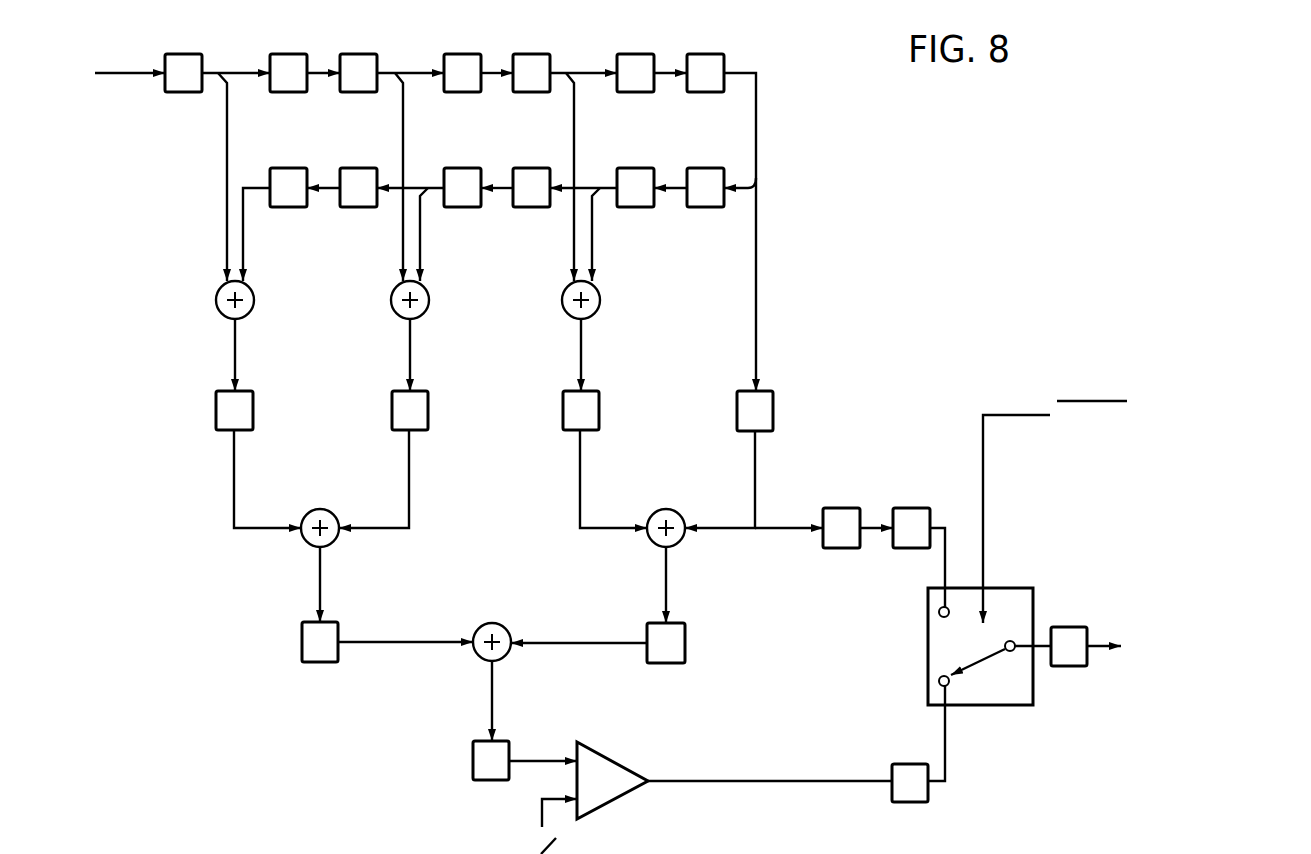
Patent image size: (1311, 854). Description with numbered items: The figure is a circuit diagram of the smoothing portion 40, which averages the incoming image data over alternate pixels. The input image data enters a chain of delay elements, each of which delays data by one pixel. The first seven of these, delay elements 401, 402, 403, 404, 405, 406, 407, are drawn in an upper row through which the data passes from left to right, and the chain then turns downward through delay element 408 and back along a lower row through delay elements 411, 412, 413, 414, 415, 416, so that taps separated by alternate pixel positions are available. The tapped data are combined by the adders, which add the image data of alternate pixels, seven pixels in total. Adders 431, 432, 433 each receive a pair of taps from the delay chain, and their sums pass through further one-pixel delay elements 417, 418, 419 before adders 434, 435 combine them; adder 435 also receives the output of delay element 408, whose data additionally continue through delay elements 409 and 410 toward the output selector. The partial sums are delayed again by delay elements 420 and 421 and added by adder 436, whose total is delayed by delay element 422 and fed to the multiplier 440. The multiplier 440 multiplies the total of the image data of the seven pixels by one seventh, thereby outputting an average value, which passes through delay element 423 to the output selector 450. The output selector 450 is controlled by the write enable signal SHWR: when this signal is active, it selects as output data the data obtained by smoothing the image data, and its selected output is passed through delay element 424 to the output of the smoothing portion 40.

The smoothing portion 40 is at (1020, 200).
The delay element 401 is at (178, 54).
The delay element 402 is at (282, 54).
The delay element 403 is at (352, 54).
The delay element 404 is at (455, 54).
The delay element 405 is at (527, 54).
The delay element 406 is at (627, 54).
The delay element 407 is at (700, 54).
The delay element 408 is at (765, 391).
The delay element 409 is at (831, 508).
The delay element 410 is at (906, 508).
The delay element 411 is at (700, 168).
The delay element 412 is at (627, 168).
The delay element 413 is at (525, 168).
The delay element 414 is at (455, 168).
The delay element 415 is at (352, 168).
The delay element 416 is at (280, 168).
The delay element 417 is at (251, 391).
The delay element 418 is at (423, 391).
The delay element 419 is at (592, 391).
The delay element 420 is at (328, 622).
The delay element 421 is at (672, 623).
The delay element 422 is at (500, 741).
The delay element 423 is at (897, 764).
The delay element 424 is at (1065, 627).
The adder 431 is at (250, 288).
The adder 432 is at (425, 288).
The adder 433 is at (595, 288).
The adder 434 is at (318, 509).
The adder 435 is at (662, 509).
The adder 436 is at (488, 623).
The multiplier 440 is at (600, 755).
The output selector 450 is at (1010, 588).